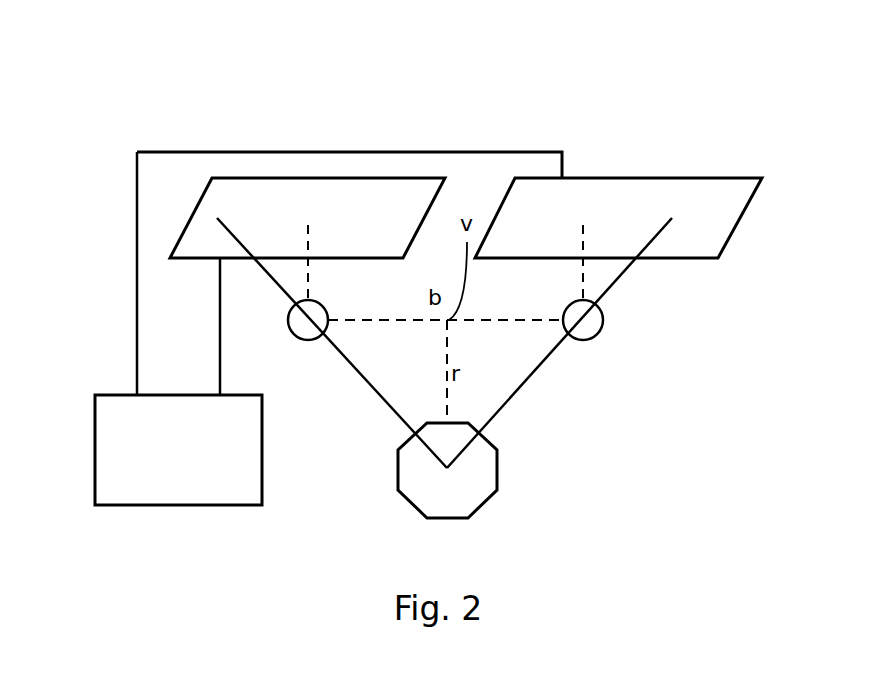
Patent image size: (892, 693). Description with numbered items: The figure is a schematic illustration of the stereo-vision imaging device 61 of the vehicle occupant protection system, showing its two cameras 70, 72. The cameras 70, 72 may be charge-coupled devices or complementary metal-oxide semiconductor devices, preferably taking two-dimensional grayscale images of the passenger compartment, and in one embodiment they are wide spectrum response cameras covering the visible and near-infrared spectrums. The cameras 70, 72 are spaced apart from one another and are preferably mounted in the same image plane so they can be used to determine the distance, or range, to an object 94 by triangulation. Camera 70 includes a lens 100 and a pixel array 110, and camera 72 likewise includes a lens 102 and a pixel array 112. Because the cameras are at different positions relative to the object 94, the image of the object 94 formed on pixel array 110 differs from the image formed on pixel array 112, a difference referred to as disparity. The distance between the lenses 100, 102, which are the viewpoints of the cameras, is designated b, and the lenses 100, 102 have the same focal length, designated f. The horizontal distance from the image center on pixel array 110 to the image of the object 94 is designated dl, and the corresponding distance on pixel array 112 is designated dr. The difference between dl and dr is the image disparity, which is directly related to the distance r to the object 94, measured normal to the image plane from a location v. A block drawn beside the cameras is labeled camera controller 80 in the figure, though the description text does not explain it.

The imaging device 61 is at (517, 64).
The camera 70 is at (232, 108).
The camera 72 is at (594, 98).
The camera controller 80 is at (263, 442).
The object 94 is at (497, 450).
The lens 100 is at (305, 339).
The lens 102 is at (589, 339).
The pixel array 110 is at (190, 217).
The pixel array 112 is at (617, 178).